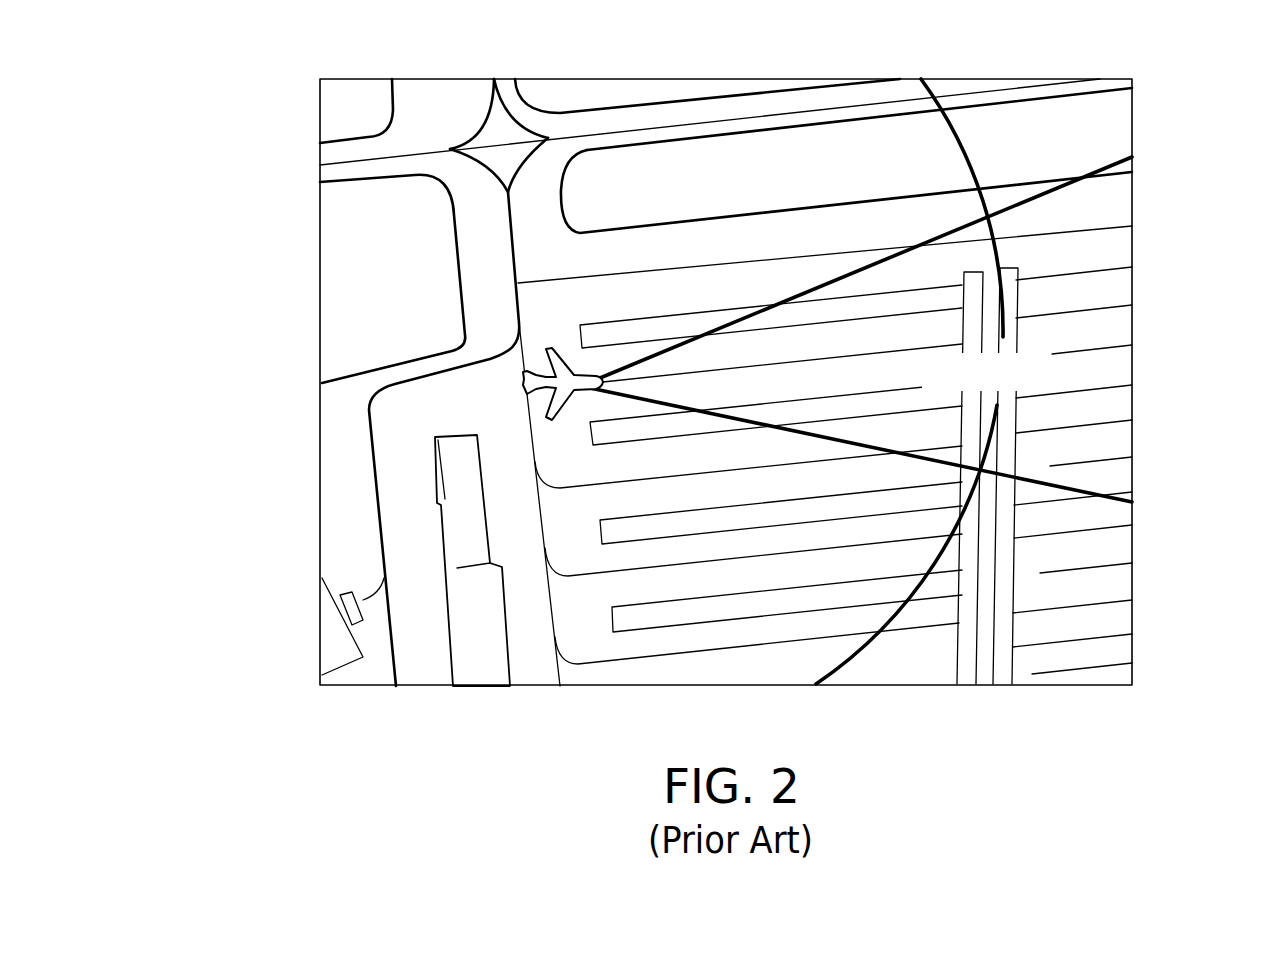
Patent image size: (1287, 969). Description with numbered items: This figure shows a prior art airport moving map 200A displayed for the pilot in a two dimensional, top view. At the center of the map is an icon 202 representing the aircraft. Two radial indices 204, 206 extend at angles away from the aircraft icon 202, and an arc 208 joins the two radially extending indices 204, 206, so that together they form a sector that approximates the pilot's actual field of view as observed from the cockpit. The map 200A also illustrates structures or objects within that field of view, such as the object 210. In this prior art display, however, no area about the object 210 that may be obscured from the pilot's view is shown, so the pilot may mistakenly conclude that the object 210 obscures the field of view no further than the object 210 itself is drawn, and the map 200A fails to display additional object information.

The airport moving map 200A is at (234, 80).
The aircraft icon 202 is at (523, 387).
The radial index 204 is at (811, 300).
The radial index 206 is at (808, 438).
The arc 208 is at (963, 148).
The object 210 is at (1013, 632).